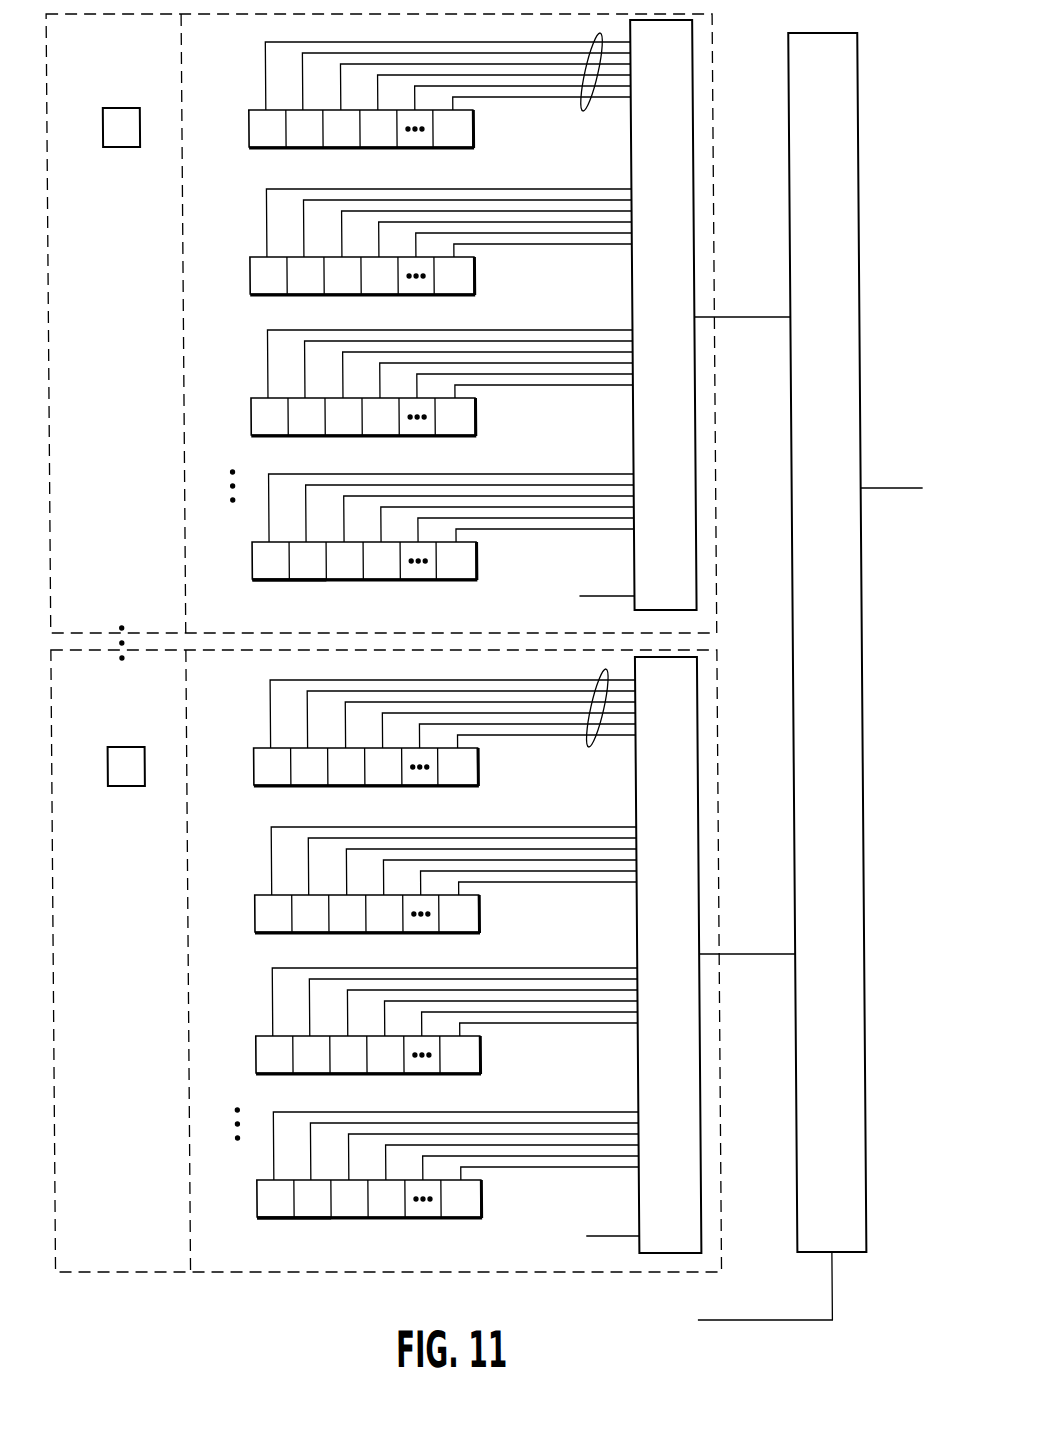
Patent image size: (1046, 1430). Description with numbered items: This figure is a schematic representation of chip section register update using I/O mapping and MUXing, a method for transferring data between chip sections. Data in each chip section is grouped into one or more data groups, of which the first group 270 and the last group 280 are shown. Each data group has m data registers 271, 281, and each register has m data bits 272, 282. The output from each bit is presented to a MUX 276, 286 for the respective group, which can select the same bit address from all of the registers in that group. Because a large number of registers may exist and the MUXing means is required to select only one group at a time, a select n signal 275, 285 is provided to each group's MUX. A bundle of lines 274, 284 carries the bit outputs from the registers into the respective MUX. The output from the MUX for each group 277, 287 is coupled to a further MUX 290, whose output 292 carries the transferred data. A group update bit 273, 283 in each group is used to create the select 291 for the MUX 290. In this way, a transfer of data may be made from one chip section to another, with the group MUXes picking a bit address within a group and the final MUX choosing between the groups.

The first group 270 is at (714, 103).
The data registers 271 is at (472, 127).
The data bits 272 is at (325, 581).
The group update bit 273 is at (121, 147).
The bus lines 274 is at (583, 111).
The select n signal 275 is at (602, 596).
The MUX 276 is at (683, 76).
The output from the MUX 277 is at (753, 314).
The last group 280 is at (712, 747).
The data registers 281 is at (472, 765).
The data bits 282 is at (325, 1219).
The group update bit 283 is at (121, 786).
The bus lines 284 is at (584, 747).
The select n signal 285 is at (603, 1236).
The MUX 286 is at (683, 708).
The output from the MUX 287 is at (752, 951).
The MUX 290 is at (843, 84).
The select 291 is at (823, 1289).
The output 292 is at (906, 486).